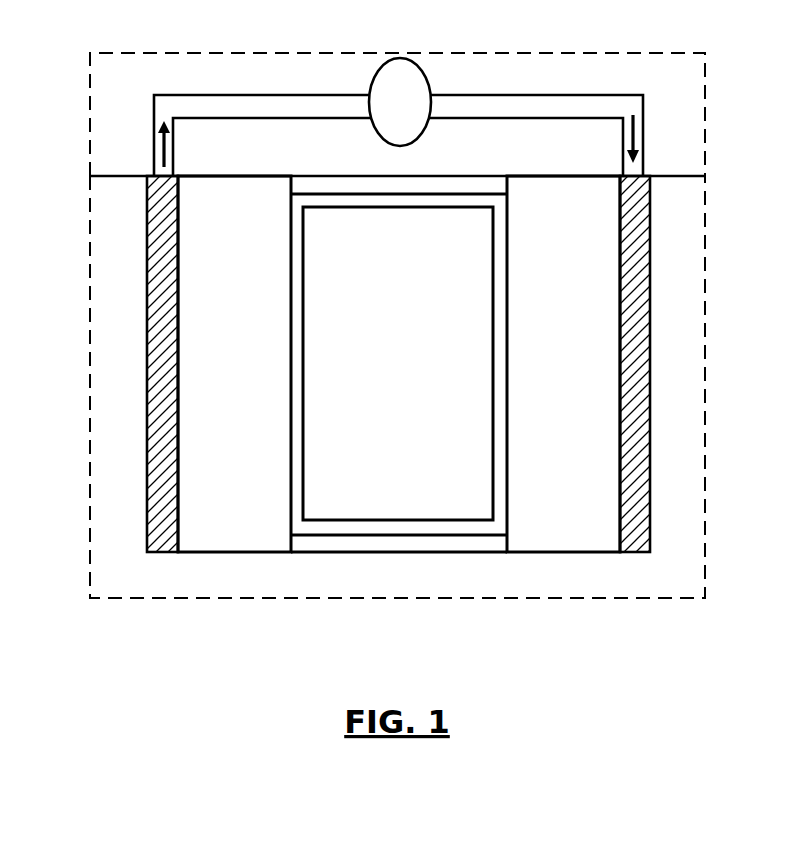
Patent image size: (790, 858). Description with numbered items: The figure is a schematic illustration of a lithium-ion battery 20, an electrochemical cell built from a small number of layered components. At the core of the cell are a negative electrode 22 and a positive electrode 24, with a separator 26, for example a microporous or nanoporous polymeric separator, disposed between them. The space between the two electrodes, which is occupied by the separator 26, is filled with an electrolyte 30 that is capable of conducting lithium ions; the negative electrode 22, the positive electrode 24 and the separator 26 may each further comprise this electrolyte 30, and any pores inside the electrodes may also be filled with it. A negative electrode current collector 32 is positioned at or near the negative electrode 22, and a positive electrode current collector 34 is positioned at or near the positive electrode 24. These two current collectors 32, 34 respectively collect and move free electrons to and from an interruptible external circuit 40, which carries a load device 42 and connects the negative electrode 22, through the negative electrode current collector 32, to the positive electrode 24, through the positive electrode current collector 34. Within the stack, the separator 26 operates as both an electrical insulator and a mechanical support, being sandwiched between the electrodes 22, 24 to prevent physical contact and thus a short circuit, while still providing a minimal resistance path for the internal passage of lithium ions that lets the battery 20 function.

The lithium-ion battery 20 is at (85, 221).
The negative electrode 22 is at (234, 364).
The positive electrode 24 is at (563, 364).
The separator 26 is at (398, 535).
The electrolyte 30 is at (398, 363).
The negative electrode current collector 32 is at (145, 257).
The positive electrode current collector 34 is at (652, 255).
The external circuit 40 is at (270, 50).
The load device 42 is at (400, 102).